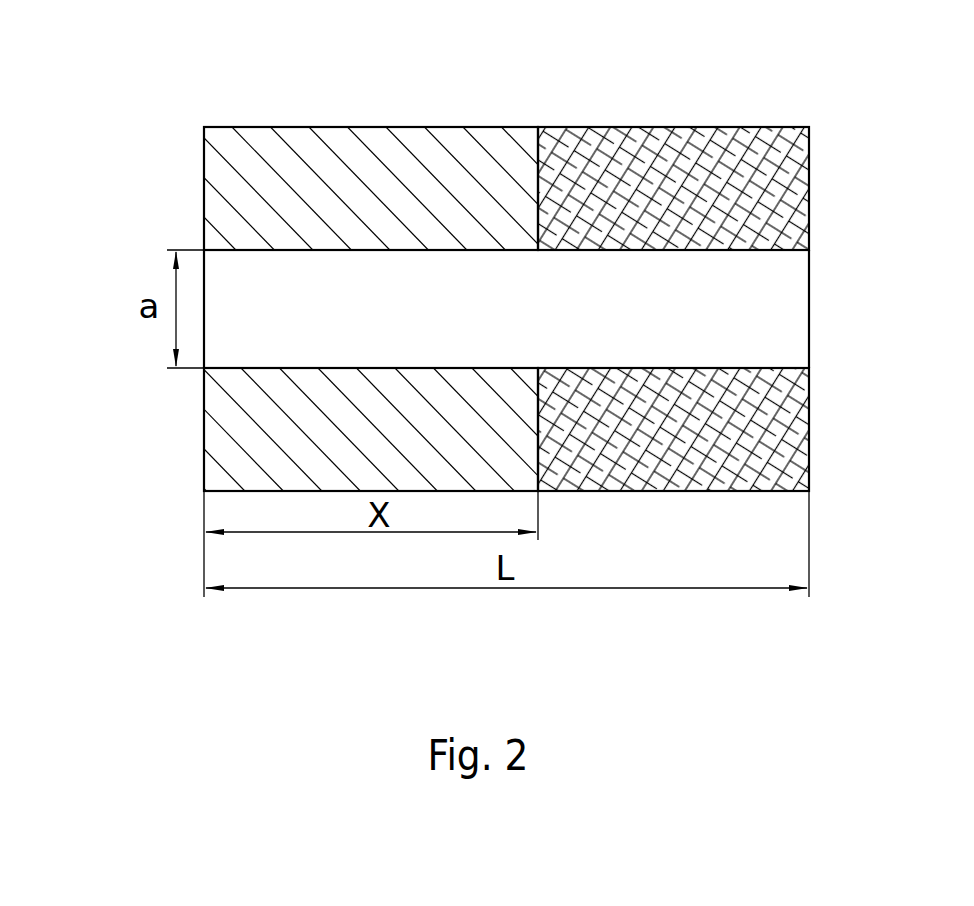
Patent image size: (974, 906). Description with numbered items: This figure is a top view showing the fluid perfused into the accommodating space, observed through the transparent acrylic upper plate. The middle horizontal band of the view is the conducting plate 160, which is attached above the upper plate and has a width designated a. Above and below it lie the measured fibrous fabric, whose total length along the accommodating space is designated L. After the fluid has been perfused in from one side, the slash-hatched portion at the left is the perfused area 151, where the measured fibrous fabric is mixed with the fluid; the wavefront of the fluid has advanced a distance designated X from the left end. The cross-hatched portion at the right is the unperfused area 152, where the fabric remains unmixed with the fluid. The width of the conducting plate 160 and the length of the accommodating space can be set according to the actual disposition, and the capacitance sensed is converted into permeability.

The perfused area 151 is at (367, 140).
The unperfused area 152 is at (795, 181).
The conducting plate 160 is at (787, 310).